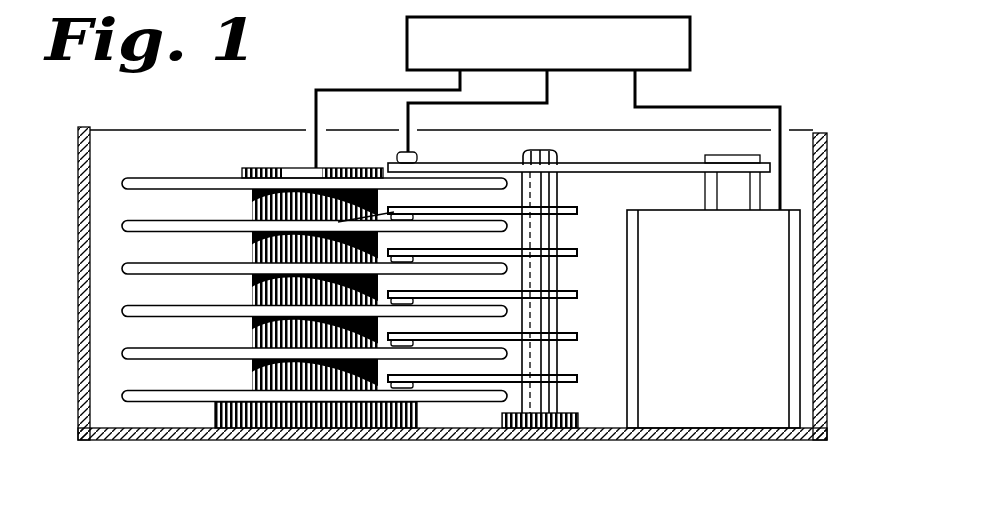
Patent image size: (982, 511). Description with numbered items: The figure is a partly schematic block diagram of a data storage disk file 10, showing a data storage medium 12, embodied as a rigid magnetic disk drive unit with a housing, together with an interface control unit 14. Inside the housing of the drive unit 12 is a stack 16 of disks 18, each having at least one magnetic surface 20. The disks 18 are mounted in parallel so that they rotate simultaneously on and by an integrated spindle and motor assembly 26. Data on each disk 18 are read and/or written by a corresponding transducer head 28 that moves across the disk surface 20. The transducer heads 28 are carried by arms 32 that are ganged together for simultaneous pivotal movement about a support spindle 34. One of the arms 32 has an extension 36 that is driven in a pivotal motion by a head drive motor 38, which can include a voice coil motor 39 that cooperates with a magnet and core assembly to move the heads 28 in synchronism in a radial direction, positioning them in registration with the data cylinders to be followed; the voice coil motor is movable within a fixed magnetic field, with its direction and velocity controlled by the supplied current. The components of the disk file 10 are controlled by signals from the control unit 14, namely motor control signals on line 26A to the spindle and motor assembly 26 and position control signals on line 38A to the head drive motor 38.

The data storage disk file 10 is at (452, 227).
The data storage medium 12 is at (262, 108).
The interface control unit 14 is at (691, 44).
The stack 16 is at (196, 156).
The disks 18 is at (122, 222).
The magnetic surface 20 is at (141, 177).
The integrated spindle and motor assembly 26 is at (313, 372).
The line 26A is at (363, 90).
The transducer head 28 is at (402, 163).
The arms 32 is at (566, 294).
The support spindle 34 is at (538, 400).
The extension 36 is at (628, 163).
The head drive motor 38 is at (705, 398).
The line 38A is at (677, 107).
The voice coil motor 39 is at (763, 188).